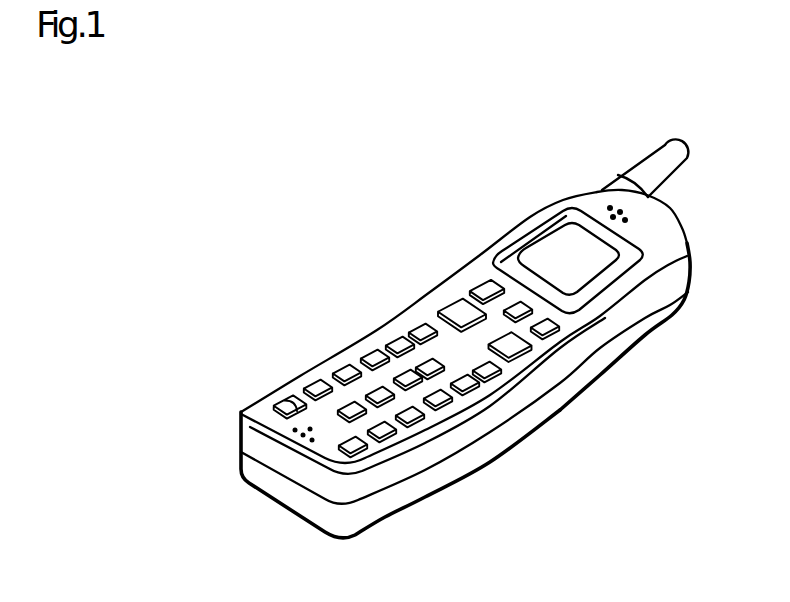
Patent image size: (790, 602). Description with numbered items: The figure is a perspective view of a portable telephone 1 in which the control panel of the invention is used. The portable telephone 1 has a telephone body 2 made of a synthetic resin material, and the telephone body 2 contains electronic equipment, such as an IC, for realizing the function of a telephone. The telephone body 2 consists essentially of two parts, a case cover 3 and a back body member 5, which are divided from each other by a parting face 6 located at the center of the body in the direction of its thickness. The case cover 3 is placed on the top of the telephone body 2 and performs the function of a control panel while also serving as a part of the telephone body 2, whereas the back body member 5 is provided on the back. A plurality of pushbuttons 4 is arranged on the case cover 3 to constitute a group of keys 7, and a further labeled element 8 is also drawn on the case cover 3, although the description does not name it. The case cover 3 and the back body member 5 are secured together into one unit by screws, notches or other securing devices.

The portable telephone 1 is at (455, 248).
The telephone body 2 is at (392, 320).
The case cover 3 is at (523, 403).
The pushbuttons 4 is at (340, 368).
The back body member 5 is at (363, 520).
The parting face 6 is at (568, 383).
The group of keys 7 is at (470, 387).
The rocker key 8 is at (275, 401).